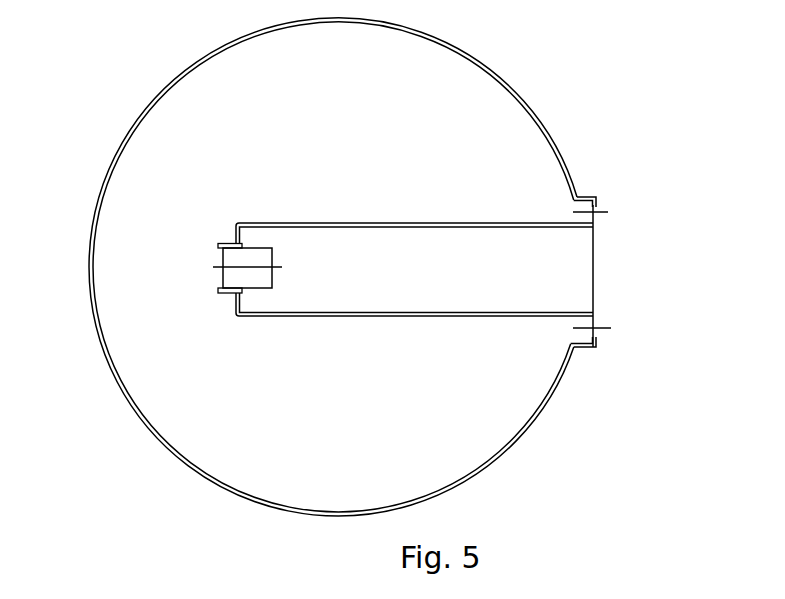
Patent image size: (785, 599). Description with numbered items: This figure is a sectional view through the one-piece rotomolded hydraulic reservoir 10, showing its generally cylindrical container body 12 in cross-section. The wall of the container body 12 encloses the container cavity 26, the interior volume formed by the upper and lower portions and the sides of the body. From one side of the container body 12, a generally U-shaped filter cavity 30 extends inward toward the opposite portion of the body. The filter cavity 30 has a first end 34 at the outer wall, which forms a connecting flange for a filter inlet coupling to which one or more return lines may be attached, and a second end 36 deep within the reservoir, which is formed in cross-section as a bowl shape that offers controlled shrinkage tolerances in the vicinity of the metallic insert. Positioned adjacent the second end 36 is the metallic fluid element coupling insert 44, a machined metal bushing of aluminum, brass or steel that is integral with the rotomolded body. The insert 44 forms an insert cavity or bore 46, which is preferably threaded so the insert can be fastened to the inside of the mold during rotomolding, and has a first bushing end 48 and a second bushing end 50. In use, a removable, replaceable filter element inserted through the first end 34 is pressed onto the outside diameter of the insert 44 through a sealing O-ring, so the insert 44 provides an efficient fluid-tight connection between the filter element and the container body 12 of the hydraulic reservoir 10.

The hydraulic reservoir 10 is at (696, 388).
The container body 12 is at (483, 465).
The container cavity 26 is at (177, 387).
The filter cavity 30 is at (543, 245).
The first end 34 is at (597, 212).
The second end 36 is at (236, 296).
The fluid element coupling insert 44 is at (220, 280).
The insert cavity or bore 46 is at (232, 243).
The first bushing end 48 is at (221, 290).
The second bushing end 50 is at (272, 248).